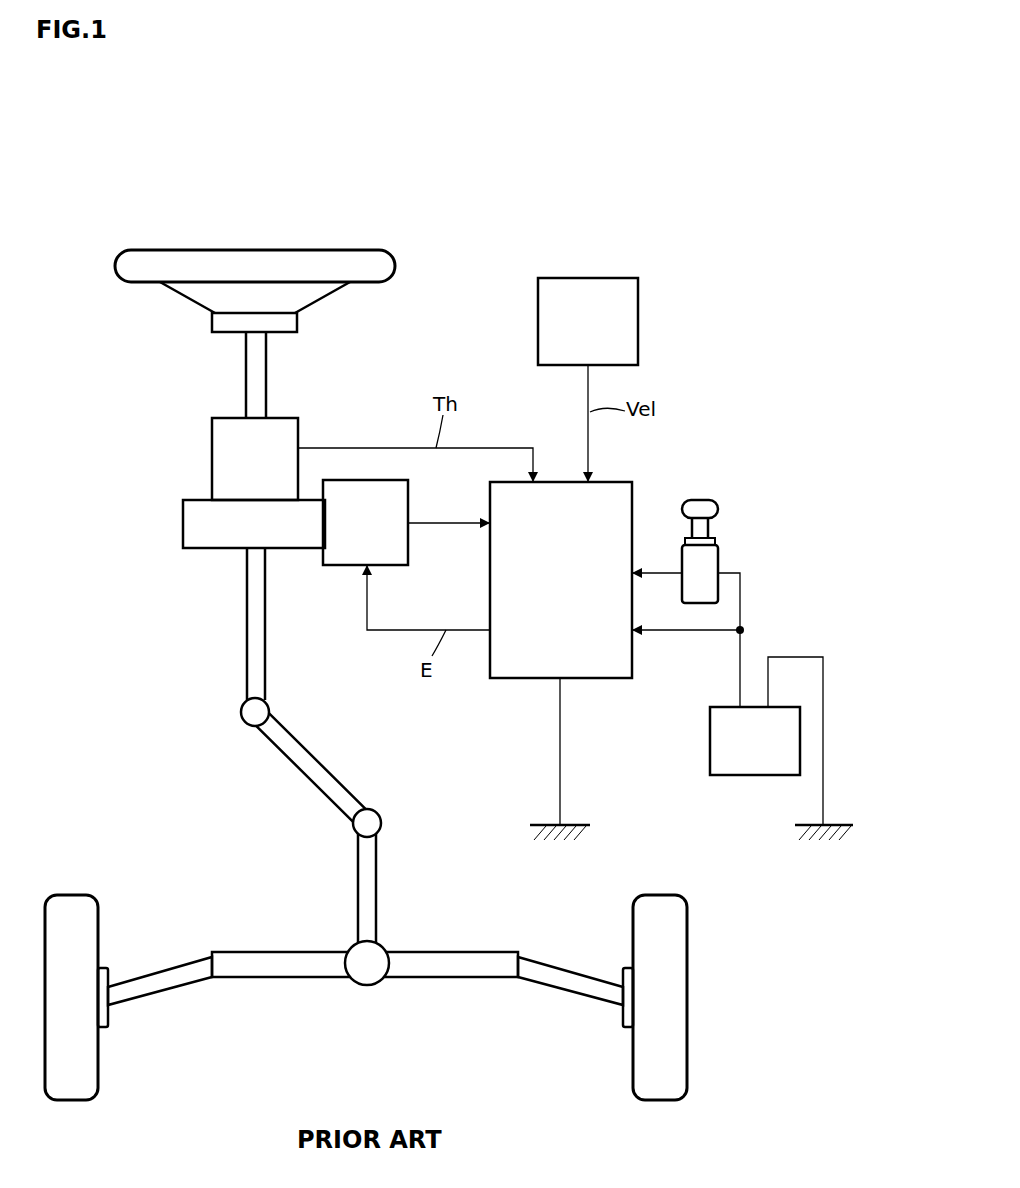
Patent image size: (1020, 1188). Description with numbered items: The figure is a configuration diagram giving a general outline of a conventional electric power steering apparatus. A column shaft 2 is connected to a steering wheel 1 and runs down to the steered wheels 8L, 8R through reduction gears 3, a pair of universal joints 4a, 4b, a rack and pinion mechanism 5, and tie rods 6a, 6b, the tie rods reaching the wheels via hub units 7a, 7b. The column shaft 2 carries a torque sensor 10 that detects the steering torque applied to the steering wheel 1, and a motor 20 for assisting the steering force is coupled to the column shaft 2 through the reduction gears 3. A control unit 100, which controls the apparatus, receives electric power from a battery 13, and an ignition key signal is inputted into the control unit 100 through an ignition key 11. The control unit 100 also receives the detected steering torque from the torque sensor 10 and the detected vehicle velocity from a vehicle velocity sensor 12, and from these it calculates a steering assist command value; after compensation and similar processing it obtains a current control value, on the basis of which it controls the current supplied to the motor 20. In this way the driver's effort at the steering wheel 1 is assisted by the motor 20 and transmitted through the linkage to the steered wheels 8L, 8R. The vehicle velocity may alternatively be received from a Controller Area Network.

The steering wheel 1 is at (396, 257).
The column shaft 2 is at (245, 382).
The reduction gears 3 is at (182, 528).
The universal joint 4a is at (241, 722).
The universal joint 4b is at (352, 832).
The rack and pinion mechanism 5 is at (383, 945).
The tie rod 6a is at (142, 970).
The tie rod 6b is at (550, 965).
The hub unit 7a is at (110, 1022).
The hub unit 7b is at (622, 1022).
The steered wheel 8L is at (98, 1085).
The steered wheel 8R is at (635, 1085).
The torque sensor 10 is at (211, 450).
The ignition key 11 is at (719, 510).
The vehicle velocity sensor 12 is at (639, 284).
The battery 13 is at (709, 734).
The motor 20 is at (409, 492).
The control unit 100 is at (634, 492).